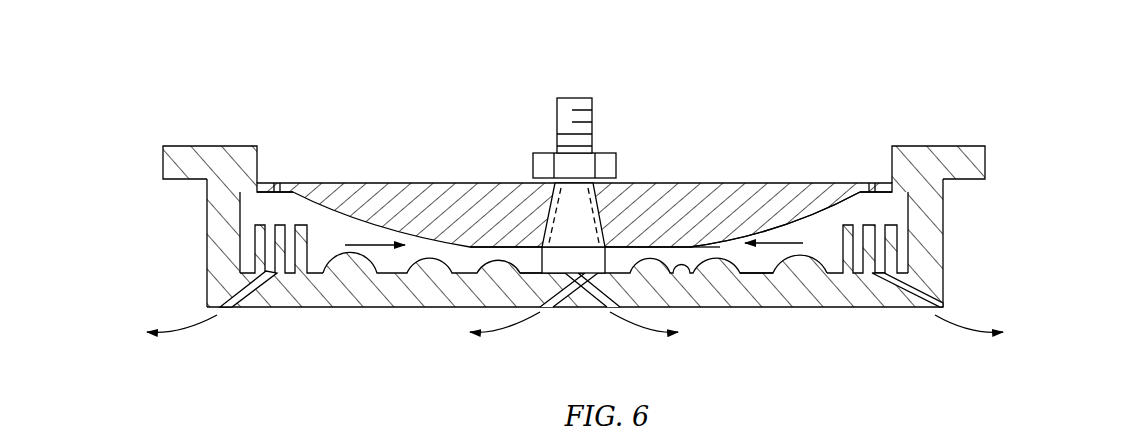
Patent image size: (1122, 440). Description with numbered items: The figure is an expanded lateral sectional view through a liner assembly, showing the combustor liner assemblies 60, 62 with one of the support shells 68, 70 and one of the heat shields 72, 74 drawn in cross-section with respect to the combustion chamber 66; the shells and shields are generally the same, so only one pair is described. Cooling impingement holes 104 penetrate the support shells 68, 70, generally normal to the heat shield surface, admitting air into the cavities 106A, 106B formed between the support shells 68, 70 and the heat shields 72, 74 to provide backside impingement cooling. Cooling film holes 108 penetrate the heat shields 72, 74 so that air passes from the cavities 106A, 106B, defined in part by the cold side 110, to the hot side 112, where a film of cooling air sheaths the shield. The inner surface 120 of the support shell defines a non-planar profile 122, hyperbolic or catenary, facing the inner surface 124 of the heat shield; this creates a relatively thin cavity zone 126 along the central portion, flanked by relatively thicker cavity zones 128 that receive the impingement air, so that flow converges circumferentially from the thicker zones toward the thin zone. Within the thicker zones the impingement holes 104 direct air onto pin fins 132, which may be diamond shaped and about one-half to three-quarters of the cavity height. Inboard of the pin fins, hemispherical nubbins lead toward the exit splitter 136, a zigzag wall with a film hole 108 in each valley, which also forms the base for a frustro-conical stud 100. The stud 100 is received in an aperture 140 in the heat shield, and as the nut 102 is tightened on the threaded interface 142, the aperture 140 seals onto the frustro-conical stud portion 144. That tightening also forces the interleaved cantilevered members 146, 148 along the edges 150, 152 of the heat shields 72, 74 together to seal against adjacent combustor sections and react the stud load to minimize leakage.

The combustor liner assembly 60 is at (602, 206).
The combustor liner assembly 62 is at (680, 100).
The combustion chamber 66 is at (395, 359).
The support shell 68 is at (574, 166).
The support shell 70 is at (693, 182).
The heat shield 72 is at (999, 243).
The heat shield 74 is at (999, 243).
The frustro-conical stud 100 is at (545, 93).
The nut 102 is at (605, 132).
The cooling impingement holes 104 is at (277, 208).
The cavity 106A is at (551, 165).
The cavity 106B is at (333, 231).
The cooling film holes 108 is at (248, 308).
The cold side 110 is at (762, 266).
The hot side 112 is at (727, 309).
The inner surface 120 is at (789, 227).
The non-planar profile 122 is at (709, 242).
The inner surface 124 is at (693, 266).
The relatively thin cavity zone 126 is at (522, 246).
The relatively thicker cavity zones 128 is at (292, 215).
The pin fins 132 is at (311, 270).
The exit splitter 136 is at (578, 265).
The aperture 140 is at (603, 160).
The threaded interface 142 is at (555, 133).
The frustro-conical stud portion 144 is at (527, 263).
The interleaved cantilevered members 146 is at (195, 146).
The interleaved cantilevered members 148 is at (962, 146).
The edge 150 is at (207, 275).
The edge 152 is at (945, 224).